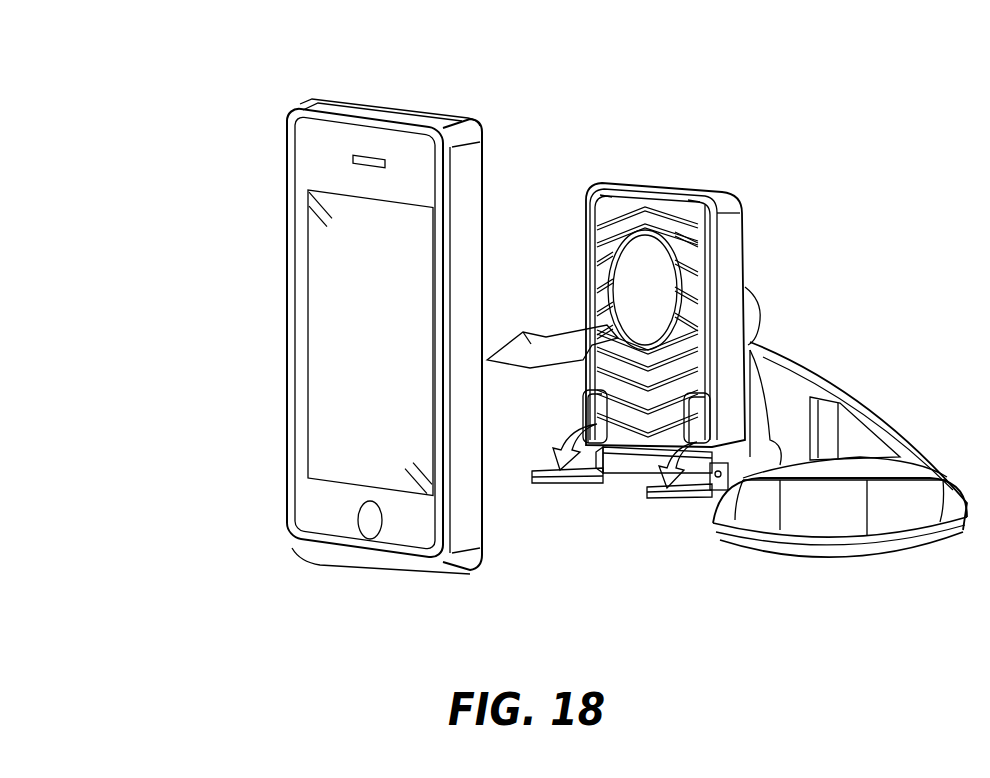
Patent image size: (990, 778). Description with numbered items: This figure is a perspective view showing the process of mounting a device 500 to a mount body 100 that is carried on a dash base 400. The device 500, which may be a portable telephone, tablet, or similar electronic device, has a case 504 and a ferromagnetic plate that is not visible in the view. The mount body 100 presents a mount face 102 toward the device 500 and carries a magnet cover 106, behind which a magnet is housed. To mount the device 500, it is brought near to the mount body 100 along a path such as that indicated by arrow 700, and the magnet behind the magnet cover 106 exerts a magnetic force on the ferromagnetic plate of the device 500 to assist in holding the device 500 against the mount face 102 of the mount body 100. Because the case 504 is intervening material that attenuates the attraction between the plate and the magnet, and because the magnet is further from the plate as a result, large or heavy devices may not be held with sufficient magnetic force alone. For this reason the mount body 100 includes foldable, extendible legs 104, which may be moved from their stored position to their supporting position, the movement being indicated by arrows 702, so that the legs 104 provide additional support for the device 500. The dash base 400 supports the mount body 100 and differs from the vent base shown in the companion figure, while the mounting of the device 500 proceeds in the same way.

The mount body 100 is at (646, 302).
The mount face 102 is at (600, 187).
The legs 104 is at (623, 485).
The magnet cover 106 is at (648, 280).
The dash base 400 is at (890, 350).
The device 500 is at (343, 298).
The case 504 is at (467, 120).
The arrow 700 is at (522, 353).
The arrows 702 is at (597, 427).